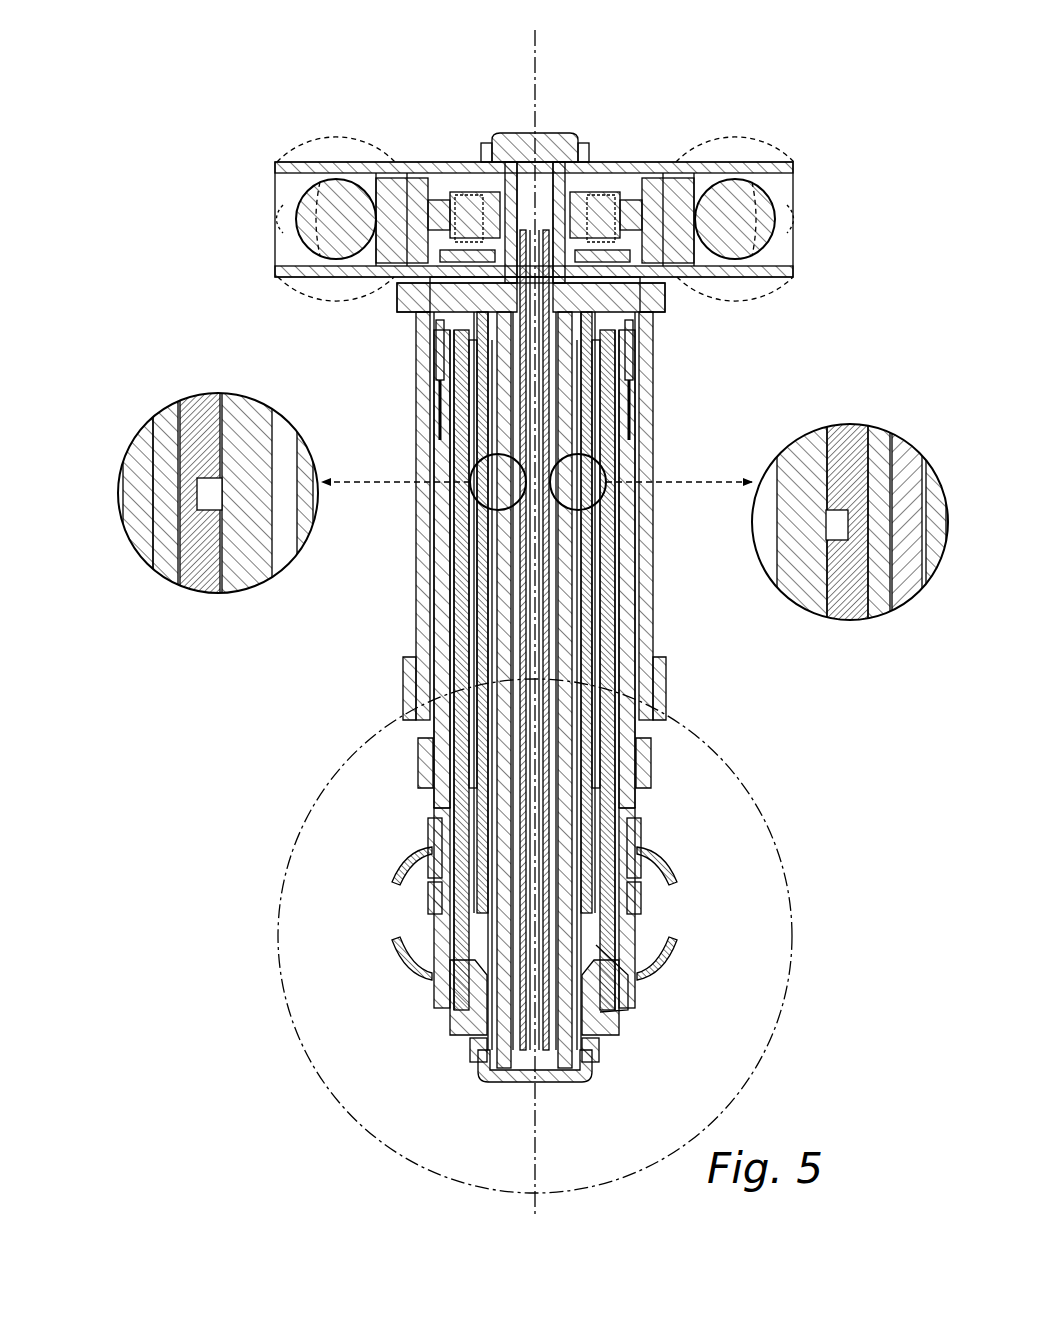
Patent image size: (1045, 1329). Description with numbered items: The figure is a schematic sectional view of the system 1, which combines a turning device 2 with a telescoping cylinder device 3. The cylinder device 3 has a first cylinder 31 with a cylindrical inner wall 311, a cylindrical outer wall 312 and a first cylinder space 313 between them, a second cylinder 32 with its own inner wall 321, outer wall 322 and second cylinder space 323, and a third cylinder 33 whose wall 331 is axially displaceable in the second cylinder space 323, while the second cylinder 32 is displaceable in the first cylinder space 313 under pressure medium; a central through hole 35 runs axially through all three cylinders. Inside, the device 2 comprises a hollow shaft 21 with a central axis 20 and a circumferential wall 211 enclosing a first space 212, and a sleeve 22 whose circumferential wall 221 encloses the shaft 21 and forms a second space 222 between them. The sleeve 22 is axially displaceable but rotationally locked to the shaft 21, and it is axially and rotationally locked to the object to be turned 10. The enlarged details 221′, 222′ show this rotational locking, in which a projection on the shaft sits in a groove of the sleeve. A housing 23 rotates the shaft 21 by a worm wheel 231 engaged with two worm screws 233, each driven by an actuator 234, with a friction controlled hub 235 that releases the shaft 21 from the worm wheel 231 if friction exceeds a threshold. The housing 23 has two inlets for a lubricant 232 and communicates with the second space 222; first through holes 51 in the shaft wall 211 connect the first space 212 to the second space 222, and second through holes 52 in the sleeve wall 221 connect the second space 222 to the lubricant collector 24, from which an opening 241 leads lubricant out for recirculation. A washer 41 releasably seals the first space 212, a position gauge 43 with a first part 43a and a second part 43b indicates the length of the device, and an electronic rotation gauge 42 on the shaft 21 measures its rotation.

The system 1 is at (816, 402).
The device 2 is at (736, 116).
The telescoping cylinder device 3 is at (740, 640).
The object to be turned 10 is at (770, 830).
The central axis 20 is at (543, 76).
The shaft 21 is at (480, 400).
The sleeve 22 is at (500, 525).
The housing 23 is at (400, 200).
The lubricant collector 24 is at (622, 1000).
The first cylinder 31 is at (650, 345).
The second cylinder 32 is at (634, 585).
The third cylinder 33 is at (658, 670).
The central through hole 35 is at (445, 332).
The washer 41 is at (550, 176).
The electronic rotation gauge 42 is at (508, 132).
The position gauge 43 is at (597, 196).
The first part 43a is at (655, 300).
The second part 43b is at (410, 300).
The first through hole 51 is at (478, 490).
The second through hole 52 is at (445, 905).
The circumferential wall 211 is at (468, 465).
The first space 212 is at (470, 440).
The circumferential wall 221 is at (475, 545).
The second space 222 is at (490, 580).
The outer shaft wall detail 221′ is at (165, 480).
The outer shaft core detail 222′ is at (215, 495).
The worm wheel 231 is at (416, 200).
The inlet for a lubricant 232 is at (283, 219).
The worm screw 233 is at (313, 205).
The actuator 234 is at (325, 150).
The friction controlled hub 235 is at (600, 212).
The opening 241 is at (602, 1040).
The cylindrical inner wall 311 is at (637, 410).
The cylindrical outer wall 312 is at (632, 445).
The first cylinder space 313 is at (644, 365).
The cylindrical inner wall 321 is at (634, 520).
The cylindrical outer wall 322 is at (632, 565).
The second cylinder space 323 is at (642, 605).
The wall 331 is at (656, 700).